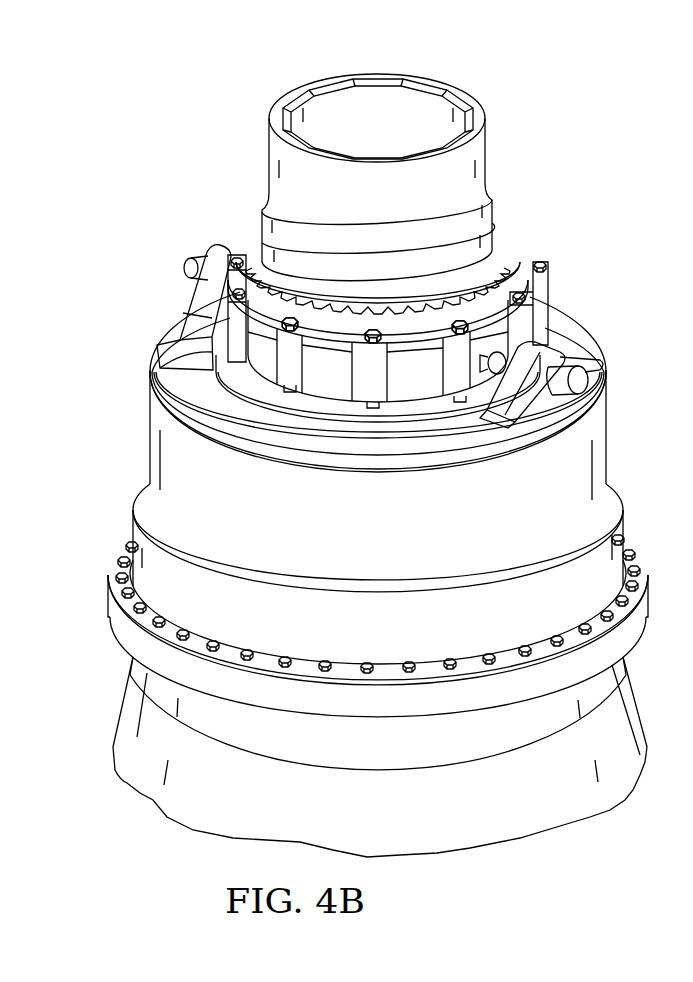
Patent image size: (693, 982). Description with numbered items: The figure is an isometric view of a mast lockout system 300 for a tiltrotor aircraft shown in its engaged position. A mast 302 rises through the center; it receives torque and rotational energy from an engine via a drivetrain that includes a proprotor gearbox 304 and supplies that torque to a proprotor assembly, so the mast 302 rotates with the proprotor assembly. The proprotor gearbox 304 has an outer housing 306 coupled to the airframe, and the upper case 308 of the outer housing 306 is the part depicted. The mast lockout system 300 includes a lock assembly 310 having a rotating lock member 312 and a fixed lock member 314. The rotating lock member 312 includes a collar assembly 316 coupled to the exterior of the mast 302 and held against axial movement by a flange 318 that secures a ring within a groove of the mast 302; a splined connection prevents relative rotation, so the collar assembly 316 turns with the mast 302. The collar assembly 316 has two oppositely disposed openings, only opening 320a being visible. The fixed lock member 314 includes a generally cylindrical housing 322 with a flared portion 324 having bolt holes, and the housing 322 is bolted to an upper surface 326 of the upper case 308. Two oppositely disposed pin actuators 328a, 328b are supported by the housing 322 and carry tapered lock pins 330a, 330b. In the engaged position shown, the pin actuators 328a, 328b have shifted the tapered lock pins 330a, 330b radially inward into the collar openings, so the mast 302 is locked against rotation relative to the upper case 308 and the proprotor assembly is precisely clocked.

The mast lockout system 300 is at (520, 70).
The mast 302 is at (283, 158).
The proprotor gearbox 304 is at (413, 858).
The outer housing 306 is at (520, 818).
The upper case 308 is at (600, 800).
The lock assembly 310 is at (586, 366).
The rotating lock member 312 is at (540, 268).
The fixed lock member 314 is at (509, 392).
The collar assembly 316 is at (540, 322).
The flange 318 is at (548, 288).
The opening 320a is at (475, 365).
The housing 322 is at (604, 487).
The flared portion 324 is at (505, 660).
The upper surface 326 is at (417, 682).
The pin actuator 328a is at (535, 420).
The pin actuator 328b is at (212, 250).
The tapered lock pin 330a is at (578, 384).
The tapered lock pin 330b is at (188, 272).